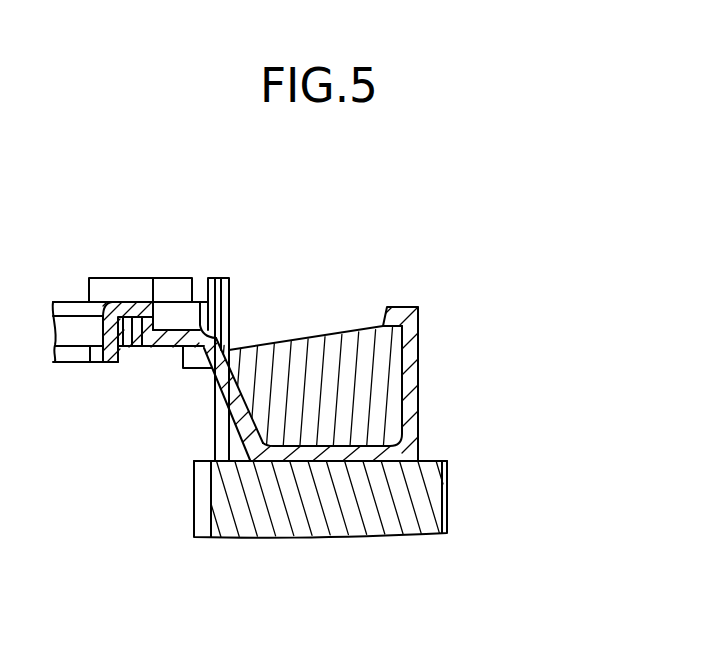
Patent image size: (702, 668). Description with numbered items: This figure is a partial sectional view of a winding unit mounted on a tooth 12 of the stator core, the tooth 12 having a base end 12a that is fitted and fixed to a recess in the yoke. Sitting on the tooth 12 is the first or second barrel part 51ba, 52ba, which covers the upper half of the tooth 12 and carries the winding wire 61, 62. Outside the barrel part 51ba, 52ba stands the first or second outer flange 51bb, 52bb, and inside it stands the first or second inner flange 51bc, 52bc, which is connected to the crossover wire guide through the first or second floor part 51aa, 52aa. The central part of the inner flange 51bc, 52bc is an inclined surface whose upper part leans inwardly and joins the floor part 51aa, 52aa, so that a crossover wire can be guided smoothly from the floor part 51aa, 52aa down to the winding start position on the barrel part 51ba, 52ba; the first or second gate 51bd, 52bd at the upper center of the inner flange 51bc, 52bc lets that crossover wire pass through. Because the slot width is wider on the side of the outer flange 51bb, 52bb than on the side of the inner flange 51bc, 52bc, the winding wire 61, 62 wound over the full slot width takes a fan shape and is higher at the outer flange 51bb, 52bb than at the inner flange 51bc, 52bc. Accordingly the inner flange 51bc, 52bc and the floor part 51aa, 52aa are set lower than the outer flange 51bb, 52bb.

The first floor part 51aa is at (134, 288).
The second floor part 52aa is at (178, 330).
The first gate 51bd is at (241, 319).
The second gate 52bd is at (226, 297).
The first inner flange 51bc is at (290, 343).
The second inner flange 52bc is at (233, 381).
The winding wire 61 is at (312, 357).
The winding wire 62 is at (342, 336).
The first outer flange 51bb is at (476, 384).
The second outer flange 52bb is at (408, 354).
The first barrel part 51ba is at (410, 432).
The second barrel part 52ba is at (343, 445).
The base end 12a is at (432, 485).
The tooth 12 is at (315, 510).